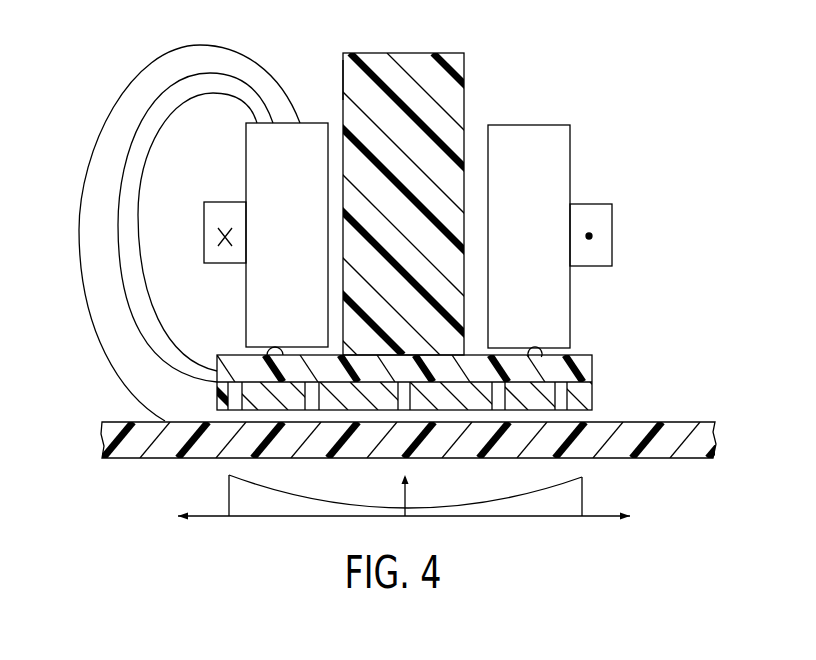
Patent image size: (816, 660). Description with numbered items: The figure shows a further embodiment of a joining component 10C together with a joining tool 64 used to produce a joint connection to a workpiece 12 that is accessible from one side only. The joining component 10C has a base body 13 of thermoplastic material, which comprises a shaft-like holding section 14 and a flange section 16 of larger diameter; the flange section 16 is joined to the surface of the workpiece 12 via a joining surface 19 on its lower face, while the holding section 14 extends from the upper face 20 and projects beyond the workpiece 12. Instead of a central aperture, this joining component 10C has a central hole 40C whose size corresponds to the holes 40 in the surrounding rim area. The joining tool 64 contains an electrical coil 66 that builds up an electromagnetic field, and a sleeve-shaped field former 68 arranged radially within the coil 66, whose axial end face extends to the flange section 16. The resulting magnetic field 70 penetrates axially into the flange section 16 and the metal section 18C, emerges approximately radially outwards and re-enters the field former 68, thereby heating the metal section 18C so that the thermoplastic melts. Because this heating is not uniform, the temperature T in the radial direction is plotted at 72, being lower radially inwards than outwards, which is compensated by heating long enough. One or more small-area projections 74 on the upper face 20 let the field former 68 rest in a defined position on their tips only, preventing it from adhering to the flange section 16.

The joining component 10C is at (487, 100).
The workpiece 12 is at (682, 433).
The base body 13 is at (340, 80).
The holding section 14 is at (424, 54).
The flange section 16 is at (230, 373).
The metal section 18C is at (540, 390).
The joining surface 19 is at (265, 416).
The upper face 20 is at (224, 345).
The holes 40 is at (561, 396).
The central hole 40C is at (400, 392).
The joining tool 64 is at (574, 138).
The electrical coil 66 is at (598, 222).
The field former 68 is at (557, 168).
The magnetic field 70 is at (170, 93).
The temperature distribution 72 is at (553, 490).
The projections 74 is at (276, 352).